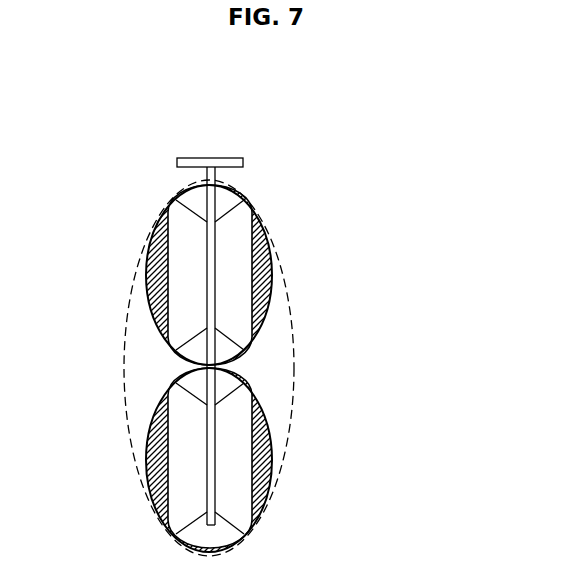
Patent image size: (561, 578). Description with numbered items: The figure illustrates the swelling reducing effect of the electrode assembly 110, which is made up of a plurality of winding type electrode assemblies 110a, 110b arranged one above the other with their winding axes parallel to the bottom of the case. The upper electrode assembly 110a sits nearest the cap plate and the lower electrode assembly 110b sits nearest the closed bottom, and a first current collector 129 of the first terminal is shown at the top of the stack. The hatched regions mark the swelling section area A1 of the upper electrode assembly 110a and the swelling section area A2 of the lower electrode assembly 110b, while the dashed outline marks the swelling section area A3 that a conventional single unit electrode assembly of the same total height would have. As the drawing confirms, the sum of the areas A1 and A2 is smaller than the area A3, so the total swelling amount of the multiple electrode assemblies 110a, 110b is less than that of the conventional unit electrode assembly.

The first current collector 129 is at (232, 156).
The electrode assembly 110 is at (260, 359).
The upper electrode assembly 110a is at (217, 275).
The lower electrode assembly 110b is at (217, 460).
The swelling section area of the upper electrode assembly A1 is at (157, 266).
The swelling section area of the lower electrode assembly A2 is at (152, 460).
The swelling section area of a conventional unit electrode assembly A3 is at (138, 361).